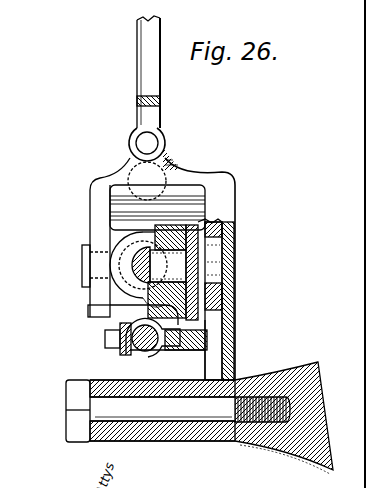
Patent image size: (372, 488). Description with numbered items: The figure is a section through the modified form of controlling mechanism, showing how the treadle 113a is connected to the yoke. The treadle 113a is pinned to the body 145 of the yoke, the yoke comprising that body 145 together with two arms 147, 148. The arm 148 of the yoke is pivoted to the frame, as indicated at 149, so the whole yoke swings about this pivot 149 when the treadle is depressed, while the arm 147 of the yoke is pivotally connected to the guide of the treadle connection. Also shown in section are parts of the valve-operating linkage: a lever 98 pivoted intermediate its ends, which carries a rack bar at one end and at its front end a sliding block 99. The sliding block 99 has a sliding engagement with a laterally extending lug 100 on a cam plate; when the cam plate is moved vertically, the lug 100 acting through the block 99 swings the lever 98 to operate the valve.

The treadle 113a is at (137, 70).
The body 145 is at (212, 165).
The arm 147 is at (93, 182).
The arm 148 is at (234, 267).
The pivot 149 is at (205, 440).
The sliding block 99 is at (110, 325).
The lever 98 is at (106, 330).
The laterally extending lug 100 is at (140, 352).